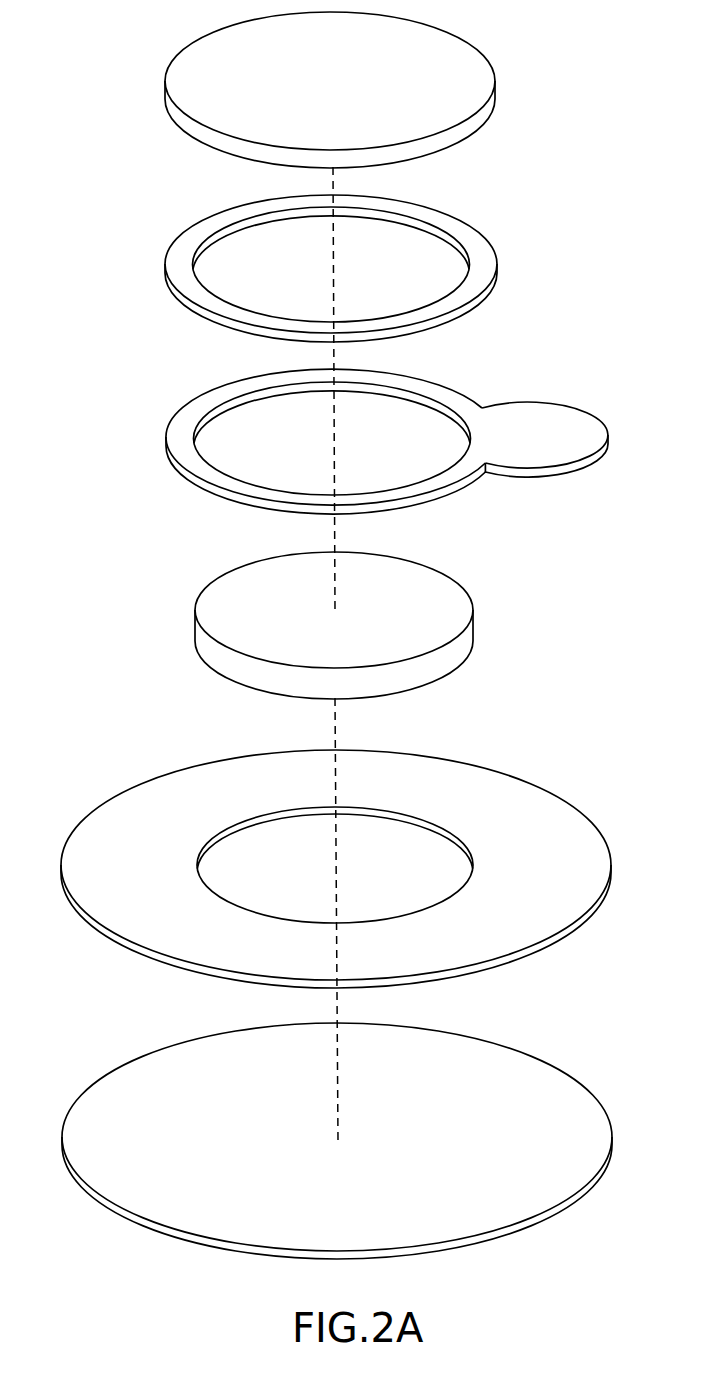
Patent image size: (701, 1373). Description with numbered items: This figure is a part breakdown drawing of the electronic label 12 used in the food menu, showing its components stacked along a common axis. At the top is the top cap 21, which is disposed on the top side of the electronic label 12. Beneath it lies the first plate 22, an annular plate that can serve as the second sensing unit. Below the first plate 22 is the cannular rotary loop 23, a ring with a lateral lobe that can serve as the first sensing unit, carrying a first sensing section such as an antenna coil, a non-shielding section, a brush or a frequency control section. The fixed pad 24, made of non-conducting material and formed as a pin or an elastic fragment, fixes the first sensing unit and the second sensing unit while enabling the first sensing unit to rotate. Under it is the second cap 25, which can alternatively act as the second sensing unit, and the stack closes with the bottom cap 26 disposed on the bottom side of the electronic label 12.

The electronic label 12 is at (98, 93).
The top cap 21 is at (495, 70).
The first plate 22 is at (497, 258).
The cannular rotary loop 23 is at (515, 402).
The fixed pad 24 is at (473, 620).
The second cap 25 is at (520, 778).
The bottom cap 26 is at (520, 1050).